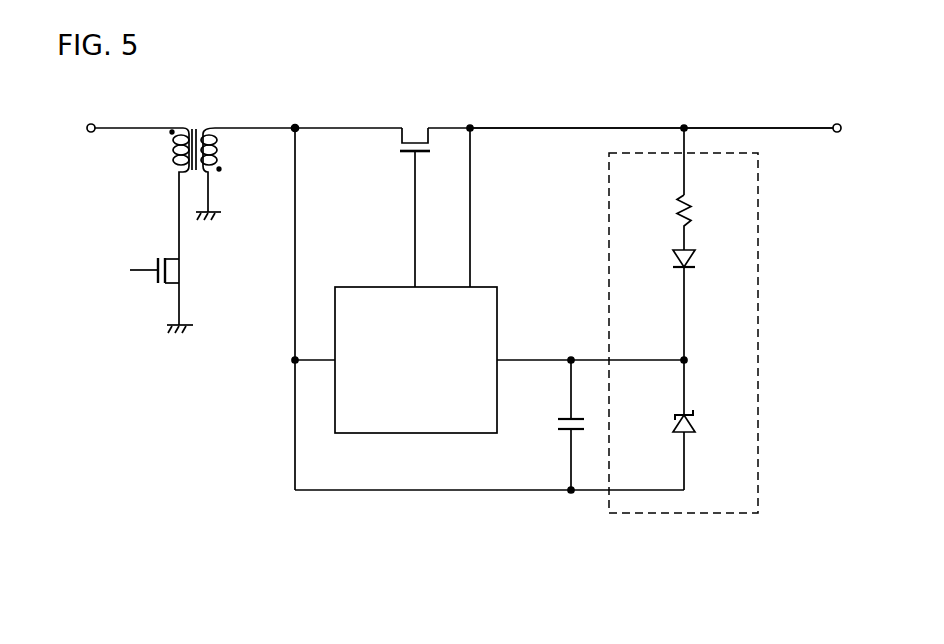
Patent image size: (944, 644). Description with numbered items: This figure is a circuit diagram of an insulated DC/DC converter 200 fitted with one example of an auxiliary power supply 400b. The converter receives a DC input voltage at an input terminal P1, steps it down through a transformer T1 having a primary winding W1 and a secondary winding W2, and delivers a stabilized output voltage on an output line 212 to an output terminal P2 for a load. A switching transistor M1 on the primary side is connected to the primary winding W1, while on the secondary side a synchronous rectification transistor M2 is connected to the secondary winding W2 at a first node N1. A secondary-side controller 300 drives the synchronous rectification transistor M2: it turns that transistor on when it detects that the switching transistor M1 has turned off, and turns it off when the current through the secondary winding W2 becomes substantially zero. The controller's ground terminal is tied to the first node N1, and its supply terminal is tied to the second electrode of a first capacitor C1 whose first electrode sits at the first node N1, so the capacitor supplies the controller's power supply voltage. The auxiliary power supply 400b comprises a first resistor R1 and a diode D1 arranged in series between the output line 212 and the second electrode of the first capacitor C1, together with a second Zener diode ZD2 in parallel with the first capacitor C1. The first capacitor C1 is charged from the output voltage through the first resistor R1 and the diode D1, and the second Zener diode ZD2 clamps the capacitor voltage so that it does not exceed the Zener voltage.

The DC/DC converter 200 is at (489, 600).
The input terminal P1 is at (88, 123).
The output terminal P2 is at (842, 123).
The first node N1 is at (295, 124).
The output line 212 is at (623, 125).
The transformer T1 is at (196, 125).
The primary winding W1 is at (168, 156).
The secondary winding W2 is at (220, 156).
The switching transistor M1 is at (158, 288).
The synchronous rectification transistor M2 is at (418, 125).
The secondary-side controller 300 is at (413, 436).
The first capacitor C1 is at (557, 423).
The auxiliary power supply 400b is at (692, 516).
The first resistor R1 is at (672, 210).
The diode D1 is at (672, 257).
The second Zener diode ZD2 is at (701, 424).